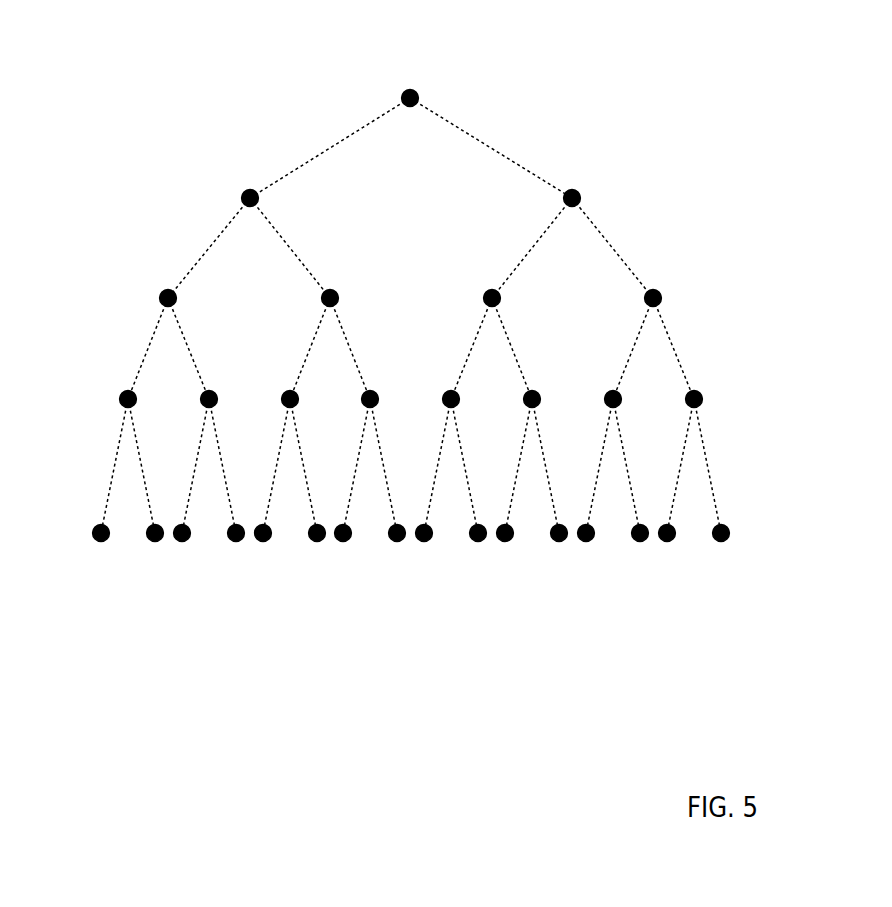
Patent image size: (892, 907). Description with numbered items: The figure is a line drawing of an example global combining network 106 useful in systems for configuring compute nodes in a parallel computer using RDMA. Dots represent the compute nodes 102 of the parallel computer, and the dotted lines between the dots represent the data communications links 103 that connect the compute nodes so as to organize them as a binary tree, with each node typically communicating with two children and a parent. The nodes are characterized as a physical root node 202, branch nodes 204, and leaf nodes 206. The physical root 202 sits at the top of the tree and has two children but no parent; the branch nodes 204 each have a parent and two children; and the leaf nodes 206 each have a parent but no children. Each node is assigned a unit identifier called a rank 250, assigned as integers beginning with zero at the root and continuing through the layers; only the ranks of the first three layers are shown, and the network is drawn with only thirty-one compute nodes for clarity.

The global combining network 106 is at (220, 623).
The data communications links 103 is at (338, 143).
The physical root node 202 is at (425, 90).
The rank 250 is at (537, 205).
The branch nodes 204 is at (740, 153).
The leaf nodes 206 is at (478, 541).
The compute nodes 102 is at (461, 610).